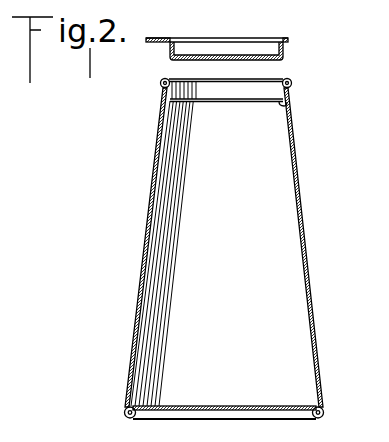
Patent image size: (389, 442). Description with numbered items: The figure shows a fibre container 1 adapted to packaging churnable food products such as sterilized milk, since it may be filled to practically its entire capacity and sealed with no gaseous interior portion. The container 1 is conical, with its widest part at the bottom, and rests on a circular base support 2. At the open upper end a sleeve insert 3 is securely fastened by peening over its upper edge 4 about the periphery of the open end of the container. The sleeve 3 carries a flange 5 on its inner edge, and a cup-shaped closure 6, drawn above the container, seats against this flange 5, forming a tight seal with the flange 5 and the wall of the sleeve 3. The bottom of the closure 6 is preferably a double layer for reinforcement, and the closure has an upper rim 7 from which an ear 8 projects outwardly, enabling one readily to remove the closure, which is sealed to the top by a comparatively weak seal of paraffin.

The container body 1 is at (307, 232).
The circular base support 2 is at (326, 411).
The sleeve insert 3 is at (254, 92).
The upper edge 4 is at (291, 80).
The flange 5 is at (286, 104).
The cup-shaped closure 6 is at (230, 32).
The upper rim 7 is at (287, 39).
The ear 8 is at (157, 37).